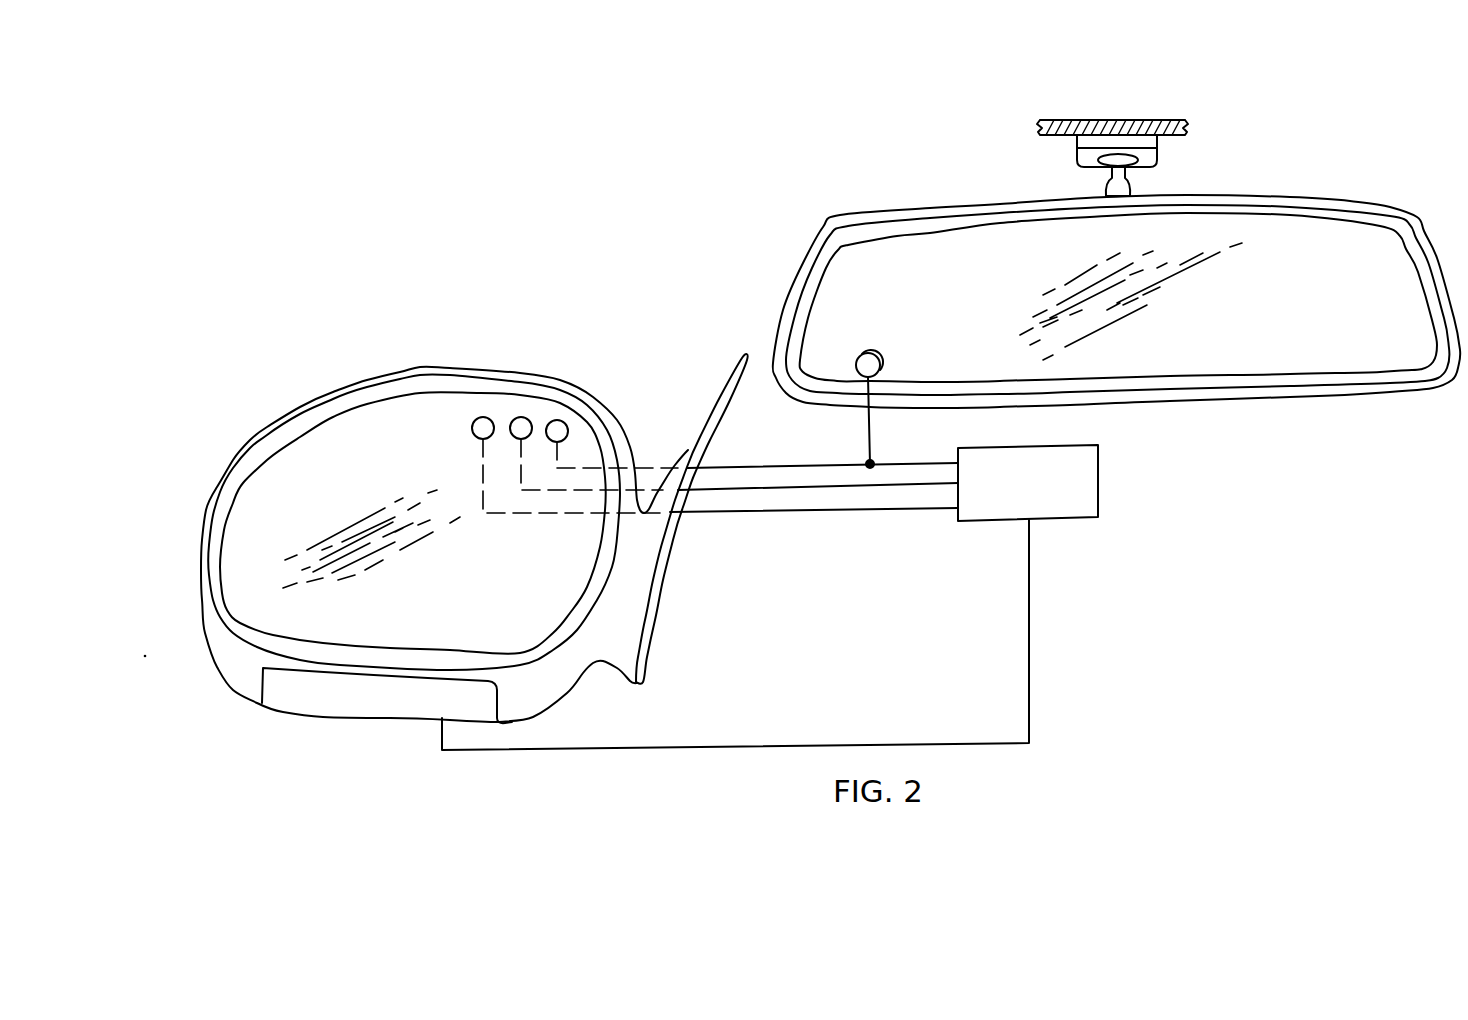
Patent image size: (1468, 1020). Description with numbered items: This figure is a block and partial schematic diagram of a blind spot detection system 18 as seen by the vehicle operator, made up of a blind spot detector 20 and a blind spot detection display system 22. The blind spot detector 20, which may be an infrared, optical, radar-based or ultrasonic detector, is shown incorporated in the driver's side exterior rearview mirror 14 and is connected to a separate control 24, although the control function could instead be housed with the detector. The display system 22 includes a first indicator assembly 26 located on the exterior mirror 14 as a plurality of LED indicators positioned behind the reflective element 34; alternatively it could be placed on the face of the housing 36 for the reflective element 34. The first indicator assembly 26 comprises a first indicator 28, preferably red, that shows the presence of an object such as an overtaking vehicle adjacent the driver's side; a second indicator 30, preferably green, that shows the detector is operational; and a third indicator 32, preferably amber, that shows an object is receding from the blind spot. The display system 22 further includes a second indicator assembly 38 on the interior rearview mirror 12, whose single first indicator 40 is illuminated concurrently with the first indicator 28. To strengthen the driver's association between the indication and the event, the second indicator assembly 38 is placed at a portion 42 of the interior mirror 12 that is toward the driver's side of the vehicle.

The interior rearview mirror 12 is at (815, 239).
The driver's side exterior rearview mirror 14 is at (318, 393).
The blind spot detection system 18 is at (828, 551).
The blind spot detector 20 is at (318, 713).
The blind spot detection display system 22 is at (723, 345).
The control 24 is at (1073, 520).
The first indicator assembly 26 is at (518, 386).
The first indicator 28 is at (553, 420).
The second indicator 30 is at (522, 417).
The third indicator 32 is at (485, 417).
The reflective element 34 is at (232, 515).
The housing 36 is at (572, 687).
The second indicator assembly 38 is at (889, 334).
The first indicator 40 is at (883, 361).
The portion 42 is at (802, 340).